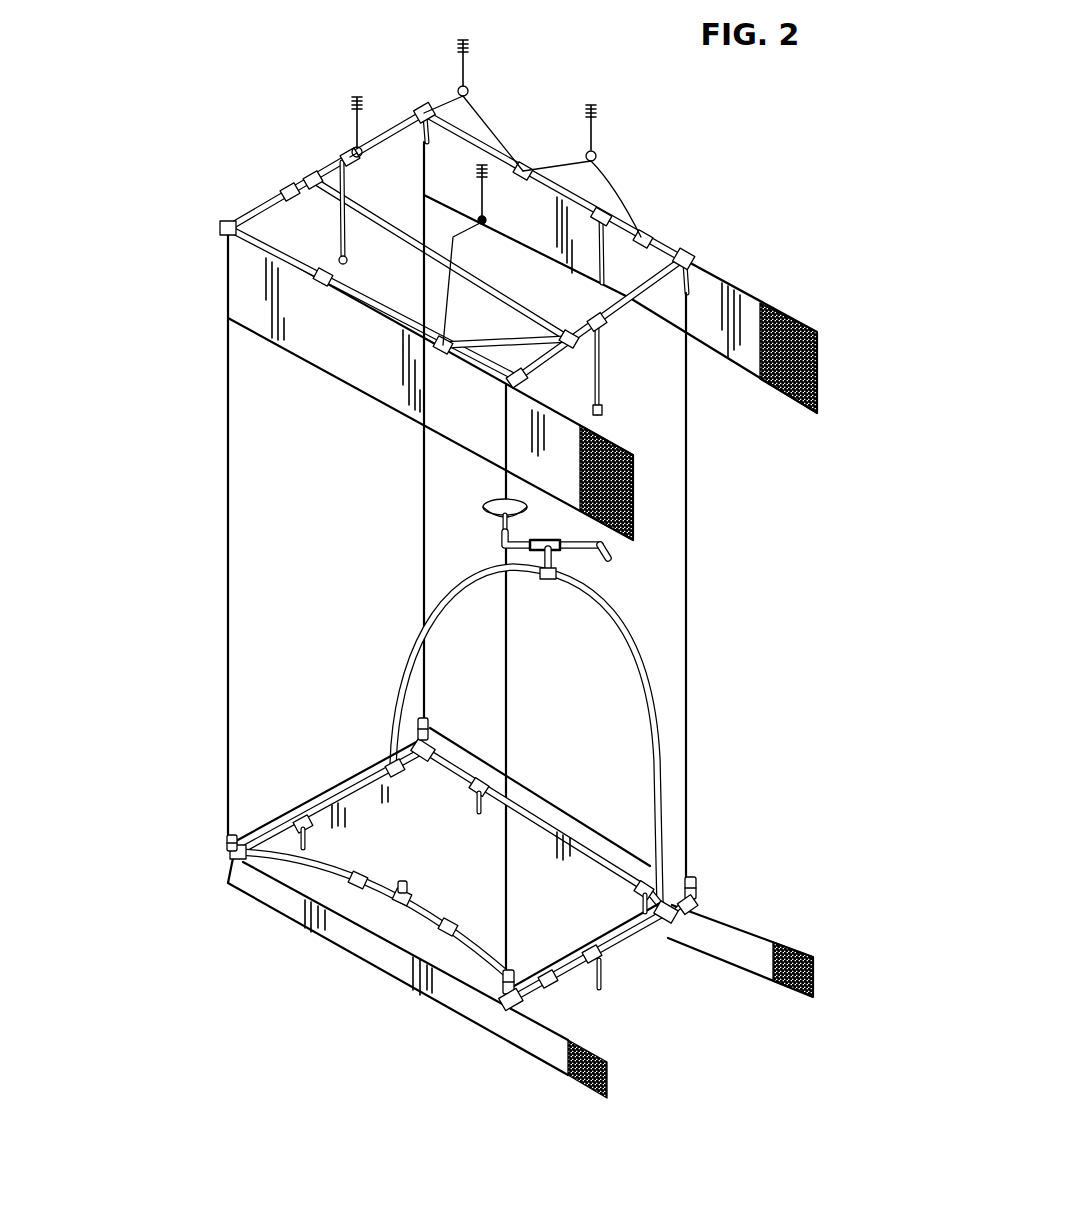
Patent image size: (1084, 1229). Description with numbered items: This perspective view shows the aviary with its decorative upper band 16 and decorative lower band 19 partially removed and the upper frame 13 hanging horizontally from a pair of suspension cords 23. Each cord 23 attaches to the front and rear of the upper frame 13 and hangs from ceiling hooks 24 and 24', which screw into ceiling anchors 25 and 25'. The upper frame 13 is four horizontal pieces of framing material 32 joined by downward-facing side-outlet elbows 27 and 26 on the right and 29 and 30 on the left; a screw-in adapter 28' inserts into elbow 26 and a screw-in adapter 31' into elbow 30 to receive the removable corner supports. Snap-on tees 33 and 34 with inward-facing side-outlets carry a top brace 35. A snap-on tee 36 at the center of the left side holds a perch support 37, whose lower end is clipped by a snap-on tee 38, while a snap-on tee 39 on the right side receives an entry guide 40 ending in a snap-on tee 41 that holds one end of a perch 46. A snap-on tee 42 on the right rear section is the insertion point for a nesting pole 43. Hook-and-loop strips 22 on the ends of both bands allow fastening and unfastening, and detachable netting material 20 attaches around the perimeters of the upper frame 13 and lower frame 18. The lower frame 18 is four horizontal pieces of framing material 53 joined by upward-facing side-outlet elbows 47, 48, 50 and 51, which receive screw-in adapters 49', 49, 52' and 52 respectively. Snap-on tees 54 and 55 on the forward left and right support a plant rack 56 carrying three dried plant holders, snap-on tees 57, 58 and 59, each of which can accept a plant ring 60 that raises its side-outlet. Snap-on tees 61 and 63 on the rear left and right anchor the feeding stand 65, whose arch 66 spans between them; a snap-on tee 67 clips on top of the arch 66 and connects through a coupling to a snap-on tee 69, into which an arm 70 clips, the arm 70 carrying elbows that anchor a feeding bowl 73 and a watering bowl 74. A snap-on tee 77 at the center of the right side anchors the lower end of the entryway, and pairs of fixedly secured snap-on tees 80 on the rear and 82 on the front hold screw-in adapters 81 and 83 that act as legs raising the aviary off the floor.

The upper frame 13 is at (664, 218).
The decorative upper band 16 is at (243, 278).
The lower frame 18 is at (410, 998).
The decorative lower band 19 is at (372, 957).
The netting material 20 is at (228, 553).
The hook-and-loop strip 22 is at (800, 367).
The suspension cords 23 is at (292, 213).
The ceiling hook 24 is at (426, 91).
The ceiling hook 24' is at (541, 150).
The ceiling anchor 25 is at (436, 94).
The ceiling anchor 25' is at (542, 205).
The side-outlet elbow 26 is at (690, 259).
The side-outlet elbow 27 is at (532, 375).
The screw-in adapter 28' is at (720, 332).
The side-outlet elbow 29 is at (228, 228).
The side-outlet elbow 30 is at (422, 112).
The screw-in adapter 31' is at (458, 118).
The horizontal pieces of framing material 32 is at (290, 186).
The snap-on tee 33 is at (305, 178).
The snap-on tee 34 is at (560, 337).
The top brace 35 is at (478, 265).
The snap-on tee 36 is at (338, 158).
The perch support 37 is at (345, 197).
The snap-on tee 38 is at (335, 248).
The snap-on tee 39 is at (597, 320).
The entry guide 40 is at (688, 433).
The snap-on tee 41 is at (600, 413).
The snap-on tee 42 is at (603, 212).
The nesting pole 43 is at (650, 238).
The perch 46 is at (447, 345).
The side-outlet elbow 47 is at (689, 915).
The side-outlet elbow 48 is at (505, 1005).
The screw-in adapter 49 is at (476, 972).
The screw-in adapter 49' is at (733, 870).
The side-outlet elbow 50 is at (428, 748).
The side-outlet elbow 51 is at (228, 852).
The screw-in adapter 52 is at (204, 795).
The screw-in adapter 52' is at (457, 700).
The horizontal pieces of framing material 53 is at (370, 770).
The snap-on tee 54 is at (238, 848).
The snap-on tee 55 is at (553, 978).
The plant rack 56 is at (355, 878).
The snap-on tee 57 is at (330, 890).
The snap-on tee 58 is at (370, 958).
The snap-on tee 59 is at (425, 960).
The plant ring 60 is at (408, 892).
The snap-on tee 61 is at (395, 765).
The snap-on tee 63 is at (670, 922).
The feeding stand 65 is at (607, 585).
The arch 66 is at (655, 720).
The snap-on tee 67 is at (542, 583).
The snap-on tee 69 is at (560, 565).
The arm 70 is at (512, 550).
The feeding bowl 73 is at (603, 537).
The watering bowl 74 is at (482, 514).
The snap-on tee 77 is at (612, 958).
The snap-on tees 80 is at (483, 780).
The screw-in adapters 81 is at (480, 806).
The snap-on tees 82 is at (305, 820).
The screw-in adapters 83 is at (307, 845).